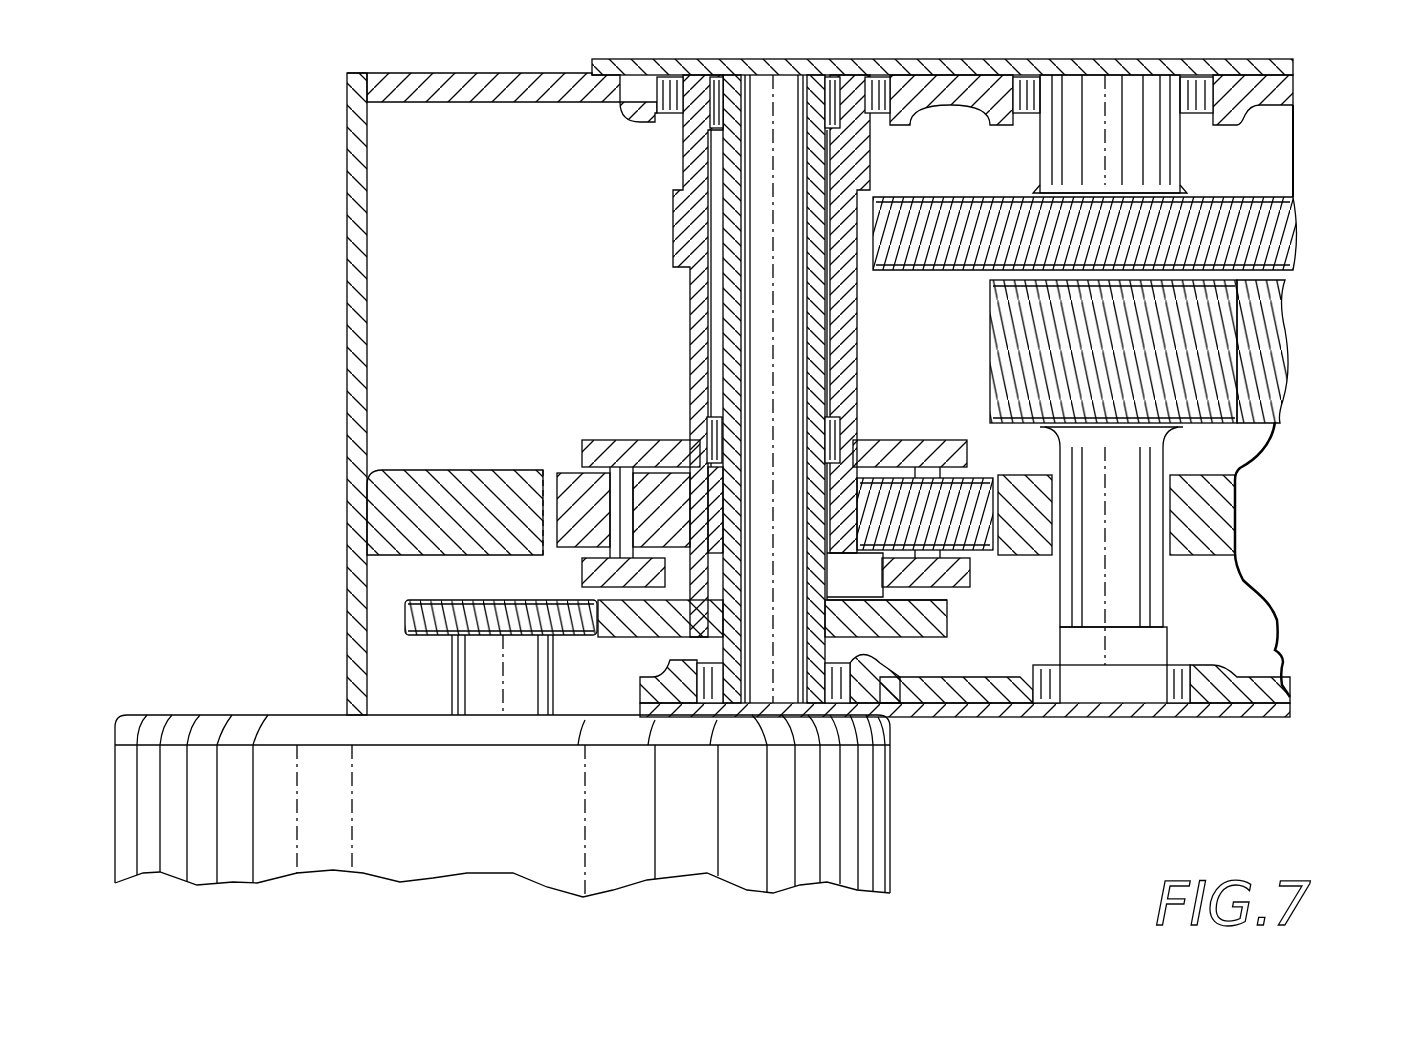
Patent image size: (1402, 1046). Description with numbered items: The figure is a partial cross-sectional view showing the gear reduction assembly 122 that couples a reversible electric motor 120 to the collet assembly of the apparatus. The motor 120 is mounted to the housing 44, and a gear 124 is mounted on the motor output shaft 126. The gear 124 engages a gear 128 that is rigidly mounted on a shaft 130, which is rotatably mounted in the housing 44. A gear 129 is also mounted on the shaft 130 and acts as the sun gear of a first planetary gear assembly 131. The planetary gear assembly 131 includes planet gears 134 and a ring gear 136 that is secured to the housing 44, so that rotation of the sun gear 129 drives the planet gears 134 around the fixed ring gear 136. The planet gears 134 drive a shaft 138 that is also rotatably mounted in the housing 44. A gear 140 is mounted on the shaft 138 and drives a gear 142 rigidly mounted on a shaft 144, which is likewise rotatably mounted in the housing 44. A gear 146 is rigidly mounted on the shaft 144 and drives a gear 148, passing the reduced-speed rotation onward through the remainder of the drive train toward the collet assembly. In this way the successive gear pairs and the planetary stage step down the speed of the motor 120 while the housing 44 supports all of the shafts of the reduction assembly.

The housing 44 is at (349, 381).
The reversible electric motor 120 is at (200, 712).
The gear reduction assembly 122 is at (485, 258).
The gear 124 is at (405, 618).
The motor output shaft 126 is at (452, 688).
The gear 128 is at (950, 630).
The gear 129 is at (840, 465).
The shaft 130 is at (880, 650).
The first planetary gear assembly 131 is at (570, 355).
The planet gears 134 is at (573, 475).
The ring gear 136 is at (545, 470).
The shaft 138 is at (690, 300).
The gear 140 is at (683, 208).
The gear 142 is at (920, 192).
The shaft 144 is at (1190, 147).
The gear 146 is at (990, 325).
The gear 148 is at (1286, 355).